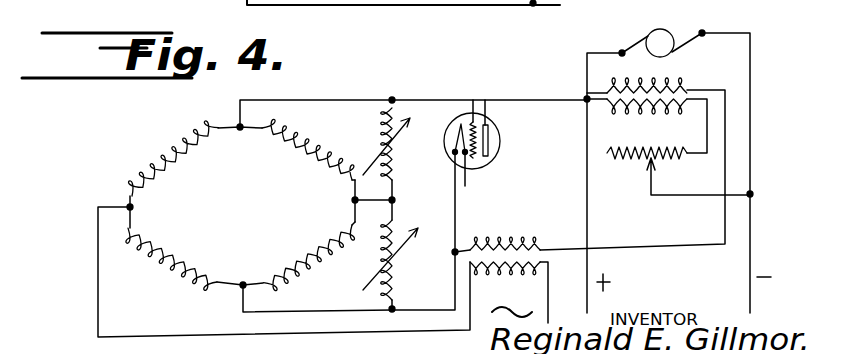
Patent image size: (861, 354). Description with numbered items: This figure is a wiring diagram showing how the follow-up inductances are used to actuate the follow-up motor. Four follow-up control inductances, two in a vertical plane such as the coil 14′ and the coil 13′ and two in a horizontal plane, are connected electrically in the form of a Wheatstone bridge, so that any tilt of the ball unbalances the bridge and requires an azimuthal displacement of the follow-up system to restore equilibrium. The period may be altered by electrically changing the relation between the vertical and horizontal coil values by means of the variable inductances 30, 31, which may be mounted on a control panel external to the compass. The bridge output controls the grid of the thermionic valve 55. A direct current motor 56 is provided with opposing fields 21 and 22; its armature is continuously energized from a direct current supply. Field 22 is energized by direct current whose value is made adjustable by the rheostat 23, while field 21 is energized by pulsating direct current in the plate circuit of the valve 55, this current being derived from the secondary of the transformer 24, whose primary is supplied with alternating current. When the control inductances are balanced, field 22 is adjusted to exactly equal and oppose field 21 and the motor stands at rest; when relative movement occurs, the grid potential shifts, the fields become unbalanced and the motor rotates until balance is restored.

The follow-up inductance in vertical plane 14′ is at (169, 258).
The follow-up inductance in vertical plane 13′ is at (312, 255).
The variable inductance 30 is at (398, 144).
The variable inductance 31 is at (398, 260).
The thermionic valve 55 is at (490, 176).
The transformer 24 is at (590, 206).
The field 21 is at (651, 71).
The field 22 is at (647, 126).
The rheostat 23 is at (678, 171).
The direct current motor 56 is at (668, 158).